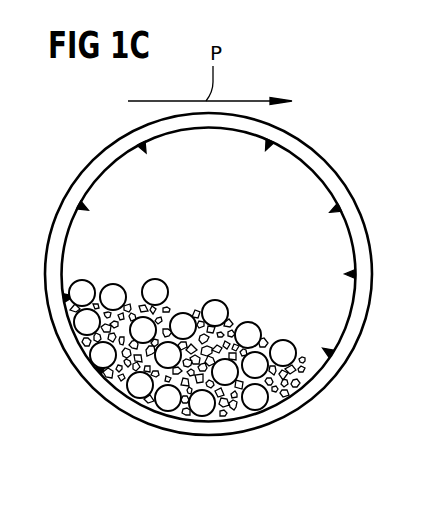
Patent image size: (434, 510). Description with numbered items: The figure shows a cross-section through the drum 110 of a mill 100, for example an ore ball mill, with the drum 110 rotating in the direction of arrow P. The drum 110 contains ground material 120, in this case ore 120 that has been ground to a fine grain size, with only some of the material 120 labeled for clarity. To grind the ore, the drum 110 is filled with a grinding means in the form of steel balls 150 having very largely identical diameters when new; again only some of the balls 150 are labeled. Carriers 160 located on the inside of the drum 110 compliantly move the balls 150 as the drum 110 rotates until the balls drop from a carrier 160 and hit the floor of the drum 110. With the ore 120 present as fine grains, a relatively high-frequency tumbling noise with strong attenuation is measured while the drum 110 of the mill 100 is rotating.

The mill 100 is at (342, 116).
The drum 110 is at (337, 186).
The ground material 120 is at (132, 308).
The steel balls 150 is at (286, 334).
The carriers 160 is at (331, 211).